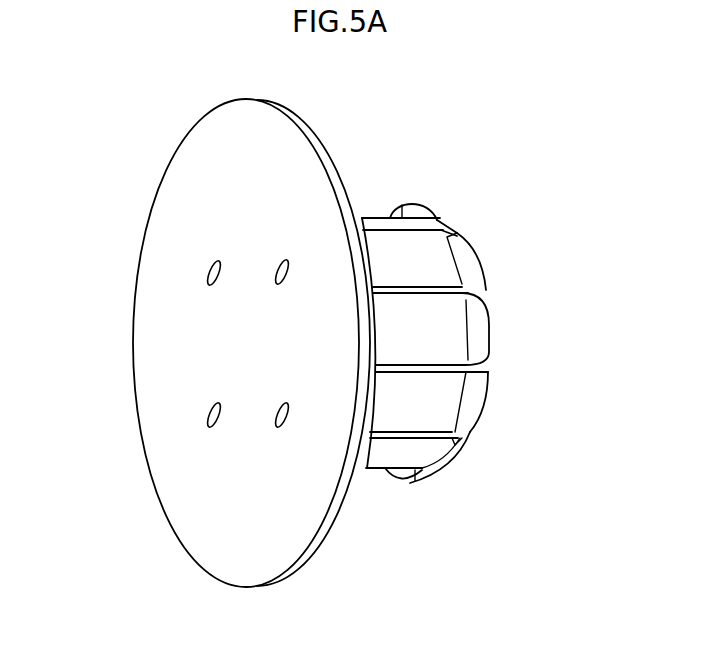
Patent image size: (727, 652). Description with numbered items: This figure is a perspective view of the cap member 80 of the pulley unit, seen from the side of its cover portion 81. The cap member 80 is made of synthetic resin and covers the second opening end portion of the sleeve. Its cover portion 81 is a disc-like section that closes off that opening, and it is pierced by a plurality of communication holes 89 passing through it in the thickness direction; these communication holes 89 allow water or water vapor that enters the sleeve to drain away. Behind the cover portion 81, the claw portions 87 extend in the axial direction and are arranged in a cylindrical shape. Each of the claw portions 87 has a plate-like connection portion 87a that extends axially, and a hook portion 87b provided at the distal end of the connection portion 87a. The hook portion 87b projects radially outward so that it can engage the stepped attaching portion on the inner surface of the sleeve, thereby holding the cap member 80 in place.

The cap member 80 is at (392, 116).
The cover portion 81 is at (182, 202).
The claw portions 87 is at (573, 161).
The connection portion 87a is at (407, 257).
The hook portion 87b is at (465, 257).
The communication holes 89 is at (277, 282).